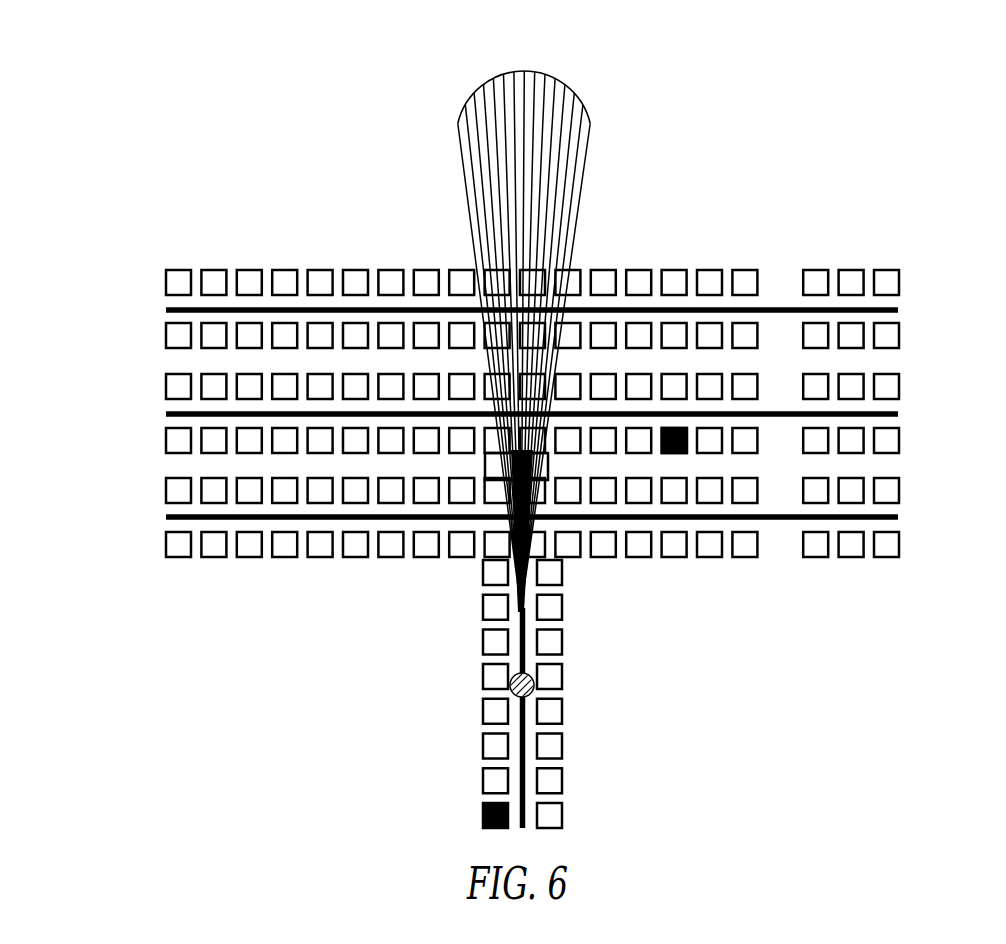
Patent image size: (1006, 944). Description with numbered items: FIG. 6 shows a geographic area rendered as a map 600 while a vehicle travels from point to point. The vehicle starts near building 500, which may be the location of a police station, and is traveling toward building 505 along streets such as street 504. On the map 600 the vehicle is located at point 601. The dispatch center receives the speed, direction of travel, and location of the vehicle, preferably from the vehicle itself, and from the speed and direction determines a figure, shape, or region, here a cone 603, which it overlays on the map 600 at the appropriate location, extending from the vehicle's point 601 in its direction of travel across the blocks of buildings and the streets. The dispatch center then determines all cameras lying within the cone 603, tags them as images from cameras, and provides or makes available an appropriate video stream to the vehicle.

The map 600 is at (205, 150).
The street 504 is at (897, 412).
The building 505 is at (673, 452).
The cone 603 is at (576, 92).
The point 601 is at (510, 688).
The building 500 is at (483, 813).